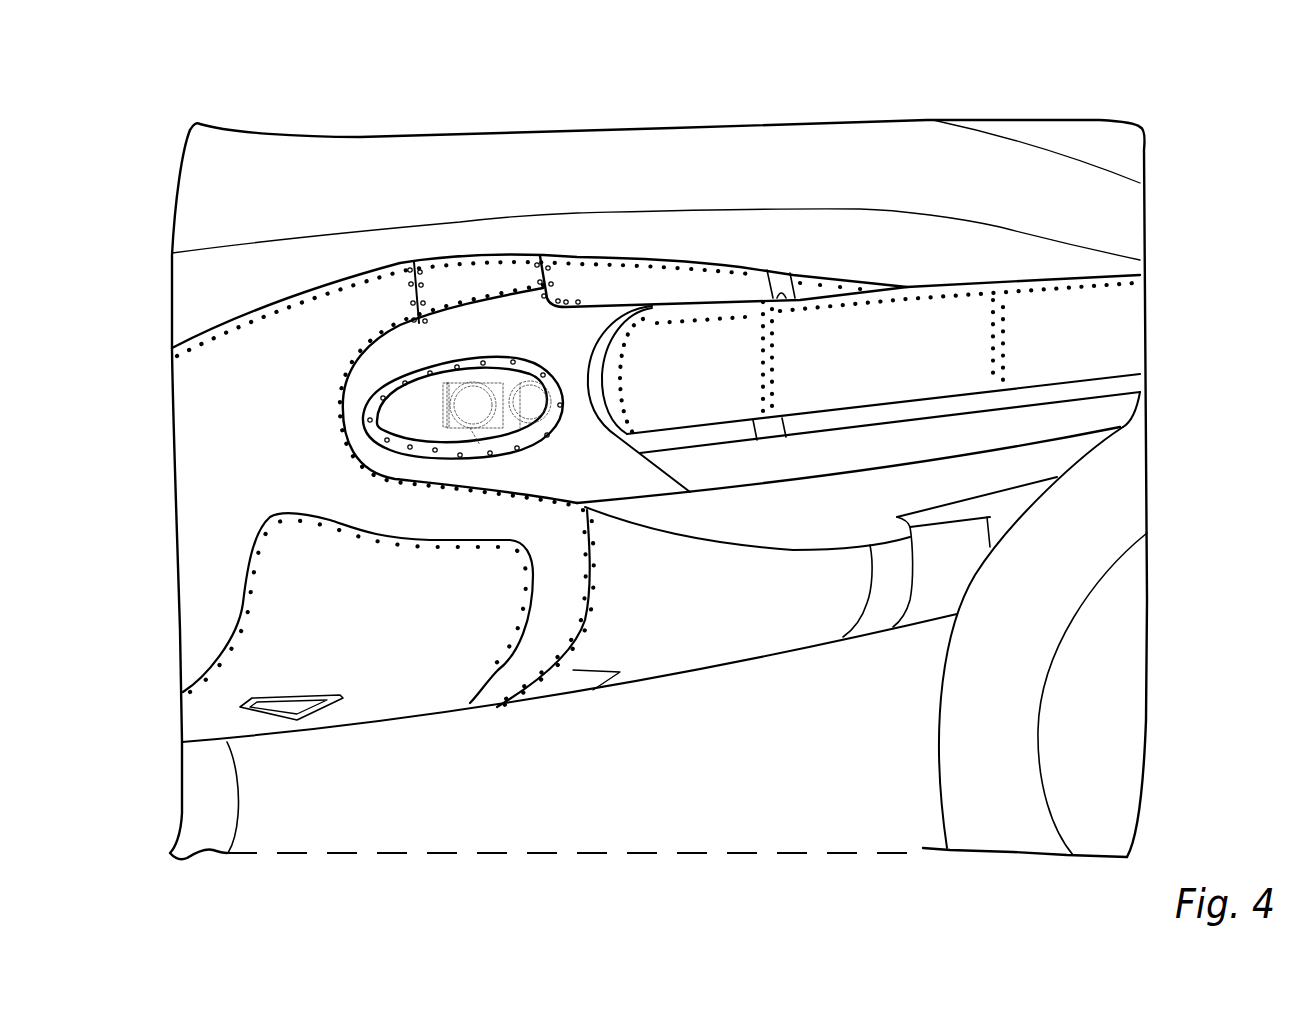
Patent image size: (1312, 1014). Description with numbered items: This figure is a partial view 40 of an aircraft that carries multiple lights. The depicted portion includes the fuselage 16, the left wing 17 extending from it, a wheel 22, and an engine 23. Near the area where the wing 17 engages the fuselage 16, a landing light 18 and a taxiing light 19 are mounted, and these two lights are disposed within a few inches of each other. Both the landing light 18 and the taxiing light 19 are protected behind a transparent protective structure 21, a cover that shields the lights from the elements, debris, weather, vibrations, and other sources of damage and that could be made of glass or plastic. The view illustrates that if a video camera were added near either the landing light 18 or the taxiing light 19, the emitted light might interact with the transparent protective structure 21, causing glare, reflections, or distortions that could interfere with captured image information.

The partial view 40 is at (1120, 112).
The fuselage 16 is at (190, 500).
The wing 17 is at (1130, 298).
The landing light 18 is at (470, 412).
The taxiing light 19 is at (526, 390).
The transparent protective structure 21 is at (403, 447).
The wheel 22 is at (200, 777).
The engine 23 is at (1130, 470).